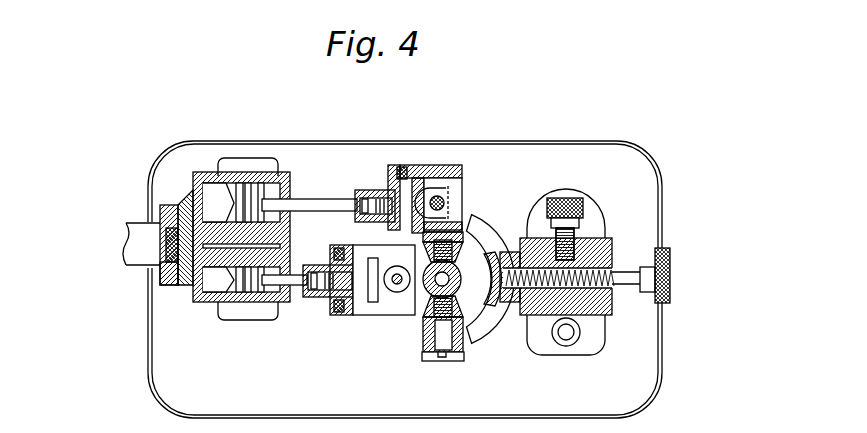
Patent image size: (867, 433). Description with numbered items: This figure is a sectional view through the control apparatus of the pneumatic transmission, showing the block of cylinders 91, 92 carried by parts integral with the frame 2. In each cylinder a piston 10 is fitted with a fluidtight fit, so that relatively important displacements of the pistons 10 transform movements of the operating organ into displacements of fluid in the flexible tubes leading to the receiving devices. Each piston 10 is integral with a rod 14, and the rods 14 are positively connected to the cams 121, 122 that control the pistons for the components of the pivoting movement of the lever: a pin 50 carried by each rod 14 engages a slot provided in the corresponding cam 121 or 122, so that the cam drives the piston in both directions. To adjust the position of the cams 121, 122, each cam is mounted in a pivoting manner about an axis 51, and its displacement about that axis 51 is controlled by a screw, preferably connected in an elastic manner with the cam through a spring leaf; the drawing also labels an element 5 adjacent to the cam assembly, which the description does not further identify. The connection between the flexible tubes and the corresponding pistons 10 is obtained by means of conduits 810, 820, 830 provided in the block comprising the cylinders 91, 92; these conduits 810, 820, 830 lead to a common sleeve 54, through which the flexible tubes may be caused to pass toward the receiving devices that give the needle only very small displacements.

The frame 2 is at (505, 160).
The common sleeve 54 is at (134, 224).
The conduit 810 is at (185, 205).
The conduit 820 is at (187, 288).
The conduit 830 is at (168, 272).
The cylinder 91 is at (212, 190).
The cylinder 92 is at (207, 284).
The piston 10 is at (262, 205).
The rod 14 is at (333, 199).
The pin 50 is at (384, 192).
The axis 51 is at (325, 250).
The cam 121 is at (420, 165).
The cam 122 is at (356, 316).
The segment lever 5 is at (492, 234).